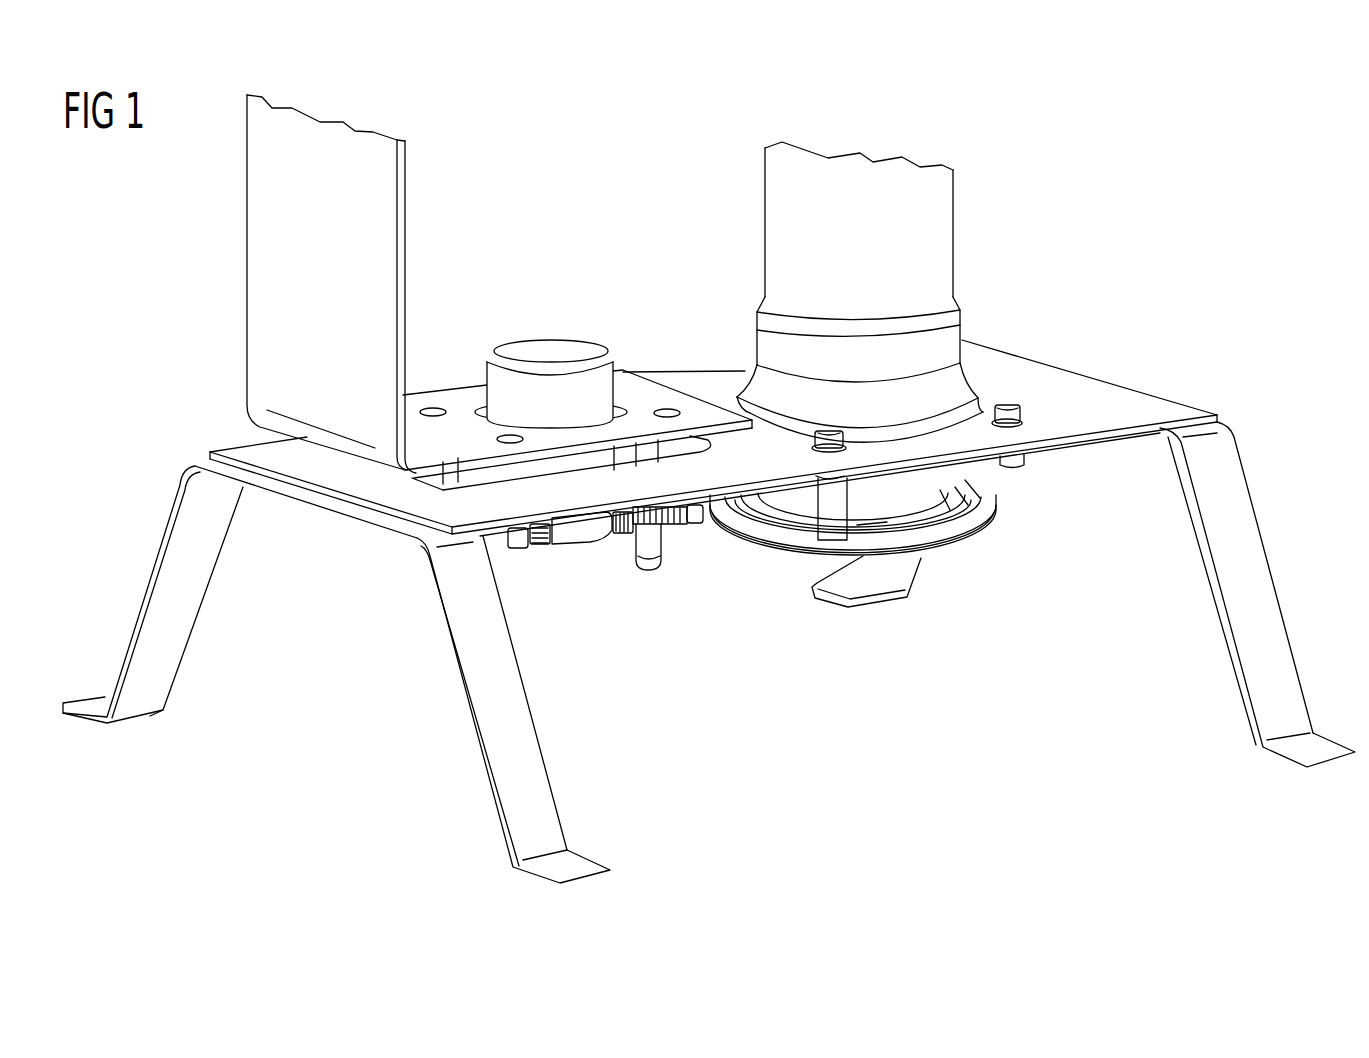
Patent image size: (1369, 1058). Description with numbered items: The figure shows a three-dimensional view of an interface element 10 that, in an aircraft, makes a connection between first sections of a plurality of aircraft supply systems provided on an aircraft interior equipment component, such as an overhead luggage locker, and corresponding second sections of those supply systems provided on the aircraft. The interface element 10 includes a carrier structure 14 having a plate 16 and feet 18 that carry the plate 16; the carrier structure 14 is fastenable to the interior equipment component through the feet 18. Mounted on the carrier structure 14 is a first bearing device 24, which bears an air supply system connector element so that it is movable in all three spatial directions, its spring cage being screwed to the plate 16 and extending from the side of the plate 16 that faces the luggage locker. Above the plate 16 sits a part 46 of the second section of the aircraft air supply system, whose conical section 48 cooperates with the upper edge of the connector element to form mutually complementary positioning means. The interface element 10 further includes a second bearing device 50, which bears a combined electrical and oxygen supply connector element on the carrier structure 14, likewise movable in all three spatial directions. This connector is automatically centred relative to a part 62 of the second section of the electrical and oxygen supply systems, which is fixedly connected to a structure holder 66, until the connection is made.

The interface element 10 is at (1243, 338).
The carrier structure 14 is at (1048, 358).
The plate 16 is at (1113, 384).
The feet 18 is at (523, 720).
The first bearing device 24 is at (970, 576).
The part of second section of air supply system 46 is at (942, 208).
The conical section 48 is at (965, 392).
The second bearing device 50 is at (577, 552).
The part of second section of electrical and oxygen supply system 62 is at (547, 348).
The structure holder 66 is at (257, 240).